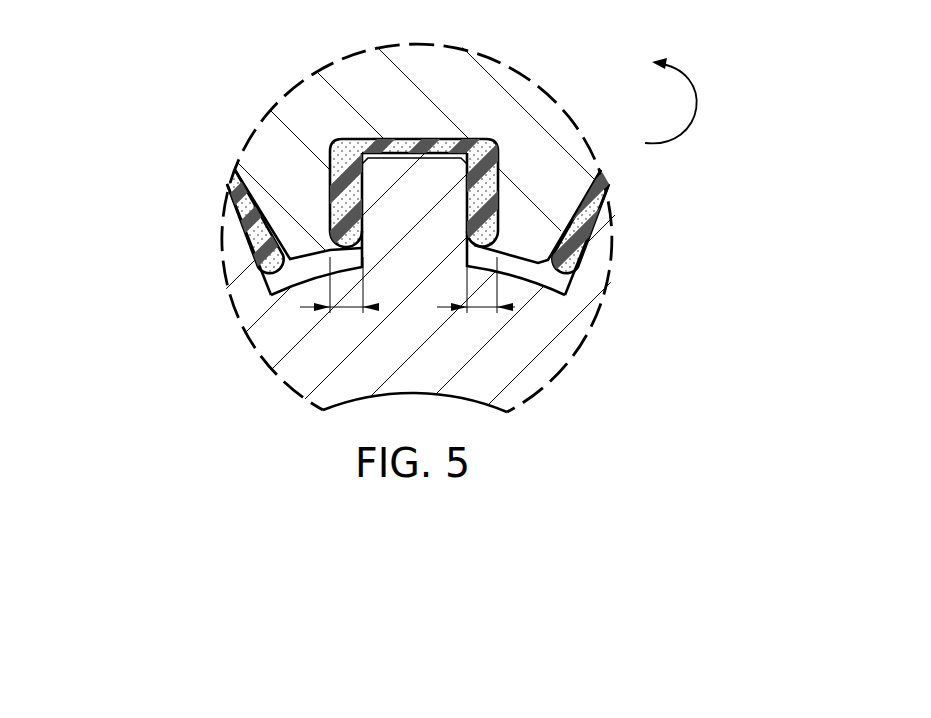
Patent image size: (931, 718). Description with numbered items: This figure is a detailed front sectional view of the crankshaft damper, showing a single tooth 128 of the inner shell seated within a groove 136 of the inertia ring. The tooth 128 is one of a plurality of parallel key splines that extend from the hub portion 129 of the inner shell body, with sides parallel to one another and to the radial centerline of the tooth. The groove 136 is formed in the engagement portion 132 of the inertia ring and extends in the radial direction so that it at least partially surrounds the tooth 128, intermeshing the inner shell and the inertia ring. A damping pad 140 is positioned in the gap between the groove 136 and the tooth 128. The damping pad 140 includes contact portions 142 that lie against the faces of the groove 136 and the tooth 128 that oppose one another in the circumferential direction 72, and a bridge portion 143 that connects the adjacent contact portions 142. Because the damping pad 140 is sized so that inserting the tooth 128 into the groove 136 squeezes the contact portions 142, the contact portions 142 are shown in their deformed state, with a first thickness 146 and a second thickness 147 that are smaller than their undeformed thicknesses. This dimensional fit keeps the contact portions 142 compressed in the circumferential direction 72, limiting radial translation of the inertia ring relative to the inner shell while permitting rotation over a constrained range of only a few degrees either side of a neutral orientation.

The circumferential direction 72 is at (698, 104).
The tooth 128 is at (412, 192).
The hub portion 129 is at (285, 294).
The engagement portion 132 is at (305, 122).
The groove 136 is at (443, 139).
The damping pad 140 is at (312, 165).
The contact portion 142 is at (326, 198).
The bridge portion 143 is at (357, 139).
The first thickness 146 is at (480, 308).
The second thickness 147 is at (347, 308).